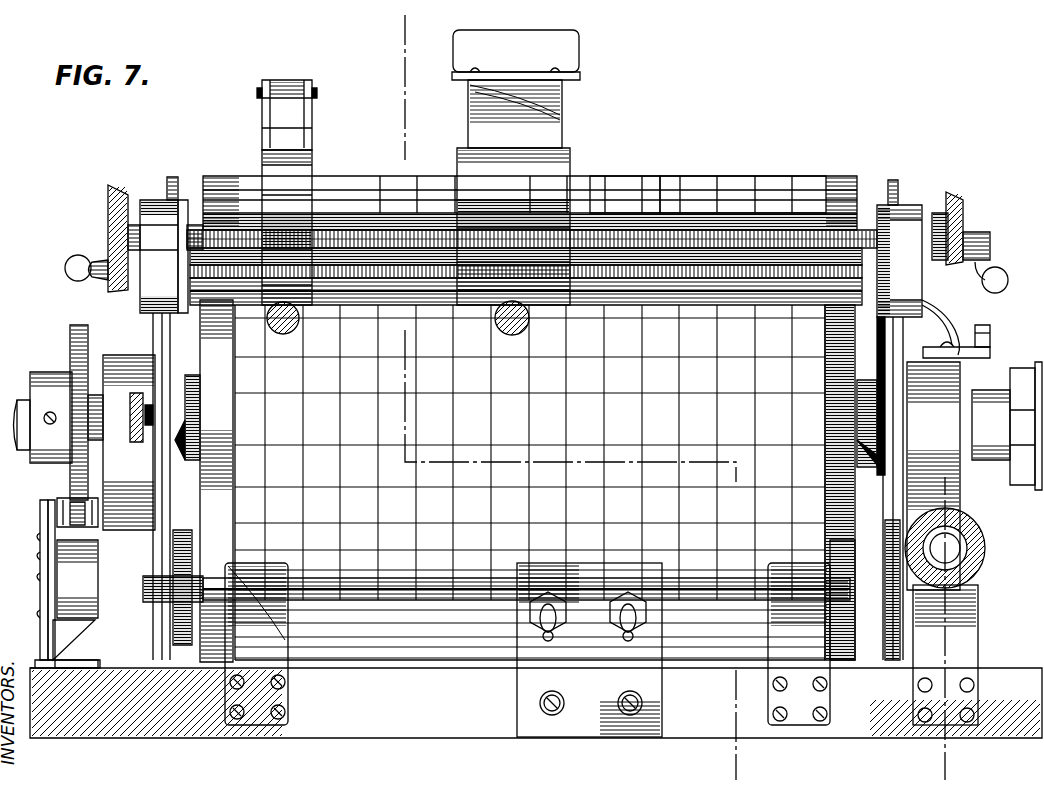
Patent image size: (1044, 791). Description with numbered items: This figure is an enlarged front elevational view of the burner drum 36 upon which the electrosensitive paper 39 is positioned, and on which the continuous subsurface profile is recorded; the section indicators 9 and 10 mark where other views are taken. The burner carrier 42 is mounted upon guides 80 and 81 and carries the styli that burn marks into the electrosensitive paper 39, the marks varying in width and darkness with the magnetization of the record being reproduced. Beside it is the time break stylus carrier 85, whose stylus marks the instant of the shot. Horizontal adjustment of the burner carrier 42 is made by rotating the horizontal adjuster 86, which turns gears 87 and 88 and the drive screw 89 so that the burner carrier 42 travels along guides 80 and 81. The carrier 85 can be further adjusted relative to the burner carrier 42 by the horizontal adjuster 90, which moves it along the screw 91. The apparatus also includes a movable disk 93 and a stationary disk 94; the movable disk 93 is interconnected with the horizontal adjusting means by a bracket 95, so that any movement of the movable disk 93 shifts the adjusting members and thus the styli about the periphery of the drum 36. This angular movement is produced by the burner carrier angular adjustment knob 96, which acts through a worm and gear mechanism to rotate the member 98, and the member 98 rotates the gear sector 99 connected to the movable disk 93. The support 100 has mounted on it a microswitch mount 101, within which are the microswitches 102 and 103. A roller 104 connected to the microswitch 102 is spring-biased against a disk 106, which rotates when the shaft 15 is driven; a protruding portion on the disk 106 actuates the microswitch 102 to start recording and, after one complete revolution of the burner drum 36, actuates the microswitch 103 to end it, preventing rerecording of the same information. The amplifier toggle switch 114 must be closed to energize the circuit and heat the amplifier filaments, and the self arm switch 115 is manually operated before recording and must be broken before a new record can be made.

The section line 9- 9 is at (385, 17).
The section line 10- 10 is at (955, 488).
The shaft 15 is at (195, 385).
The burner drum 36 is at (740, 185).
The electrosensitive paper 39 is at (595, 178).
The burner carrier 42 is at (627, 108).
The guide 80 is at (655, 222).
The guide 81 is at (640, 295).
The time break stylus carrier 85 is at (312, 152).
The horizontal adjuster 86 is at (1005, 265).
The gear 87 is at (938, 214).
The gear 88 is at (945, 303).
The drive screw 89 is at (703, 270).
The horizontal adjuster 90 is at (78, 256).
The screw 91 is at (217, 232).
The movable disk 93 is at (172, 178).
The stationary disk 94 is at (903, 418).
The bracket 95 is at (180, 338).
The burner carrier angular adjustment knob 96 is at (962, 547).
The member 98 is at (427, 580).
The gear sector 99 is at (190, 530).
The support 100 is at (330, 722).
The microswitch mount 101 is at (45, 618).
The microswitch 102 is at (95, 565).
The microswitch 103 is at (60, 500).
The roller 104 is at (66, 515).
The disk 106 is at (70, 335).
The amplifier toggle switch 114 is at (553, 605).
The self arm switch 115 is at (646, 592).